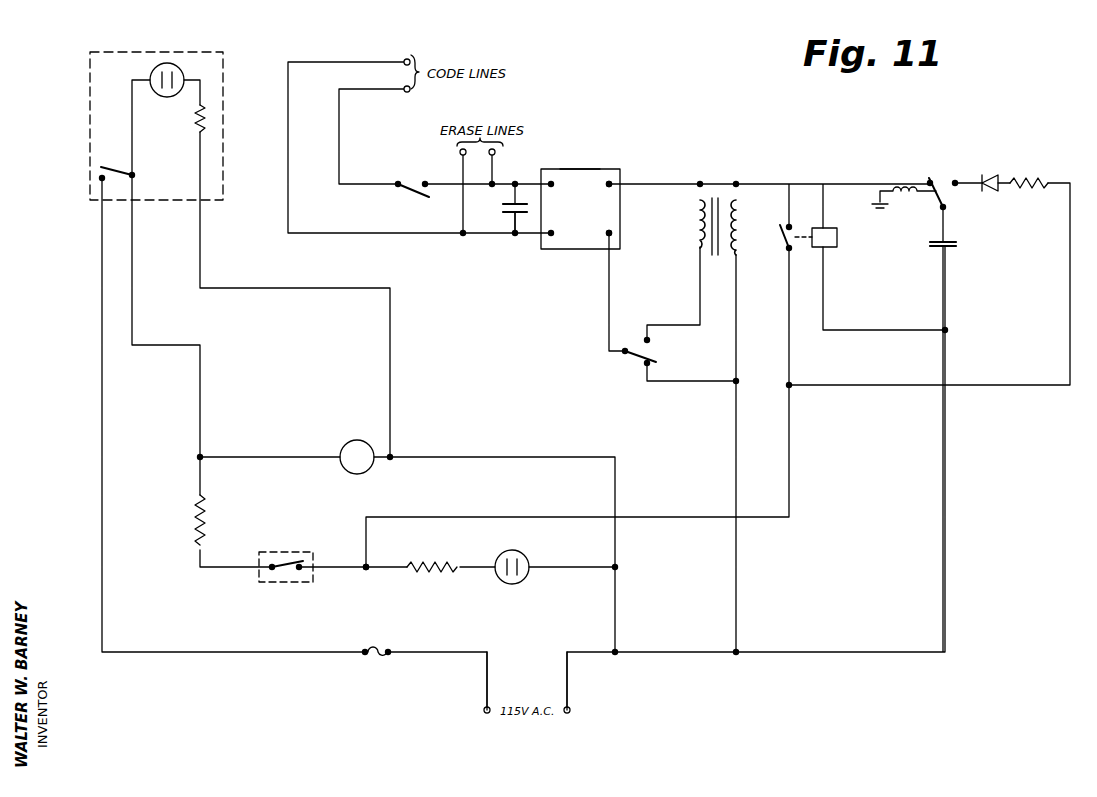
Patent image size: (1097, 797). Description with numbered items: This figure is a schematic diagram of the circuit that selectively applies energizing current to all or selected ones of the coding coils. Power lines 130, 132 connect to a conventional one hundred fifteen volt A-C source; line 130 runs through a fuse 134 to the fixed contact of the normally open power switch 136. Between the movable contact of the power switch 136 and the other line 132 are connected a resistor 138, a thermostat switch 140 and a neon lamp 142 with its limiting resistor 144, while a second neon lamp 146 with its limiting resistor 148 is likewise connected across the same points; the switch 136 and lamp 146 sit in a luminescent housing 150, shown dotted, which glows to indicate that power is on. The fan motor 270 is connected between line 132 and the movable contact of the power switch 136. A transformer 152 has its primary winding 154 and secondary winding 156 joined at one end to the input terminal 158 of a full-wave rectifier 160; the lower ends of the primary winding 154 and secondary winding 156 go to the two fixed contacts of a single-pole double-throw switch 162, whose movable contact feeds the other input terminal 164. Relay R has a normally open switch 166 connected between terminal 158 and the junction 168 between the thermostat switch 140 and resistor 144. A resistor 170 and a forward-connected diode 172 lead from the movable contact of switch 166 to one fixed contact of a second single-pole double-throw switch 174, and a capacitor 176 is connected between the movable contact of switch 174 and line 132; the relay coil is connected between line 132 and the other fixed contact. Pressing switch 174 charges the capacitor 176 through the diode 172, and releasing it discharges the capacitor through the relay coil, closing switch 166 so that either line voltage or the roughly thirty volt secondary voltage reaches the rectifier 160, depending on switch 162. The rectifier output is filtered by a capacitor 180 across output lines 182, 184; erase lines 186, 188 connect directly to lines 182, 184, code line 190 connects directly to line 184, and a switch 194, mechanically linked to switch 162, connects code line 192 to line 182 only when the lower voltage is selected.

The power line 130 is at (482, 671).
The power line 132 is at (570, 682).
The fuse 134 is at (382, 646).
The power switch 136 is at (109, 160).
The resistor 138 is at (206, 520).
The thermostat switch 140 is at (276, 586).
The neon lamp 142 is at (520, 554).
The limiting resistor 144 is at (418, 566).
The neon lamp 146 is at (174, 63).
The limiting resistor 148 is at (206, 121).
The luminescent housing 150 is at (90, 93).
The transformer 152 is at (706, 262).
The primary winding 154 is at (744, 210).
The secondary winding 156 is at (699, 214).
The input terminal 158 is at (611, 180).
The full-wave rectifier 160 is at (590, 169).
The single-pole double-throw switch 162 is at (656, 354).
The input terminal 164 is at (599, 241).
The relay switch 166 is at (779, 261).
The junction 168 is at (367, 572).
The resistor 170 is at (1028, 182).
The diode 172 is at (990, 177).
The single-pole double-throw switch 174 is at (946, 175).
The capacitor 176 is at (956, 247).
The capacitor 180 is at (508, 219).
The output line 182 is at (552, 169).
The output line 184 is at (523, 237).
The erase line 186 is at (494, 177).
The erase line 188 is at (461, 160).
The code line 190 is at (361, 60).
The code line 192 is at (358, 90).
The switch 194 is at (391, 197).
The fan motor 270 is at (362, 440).